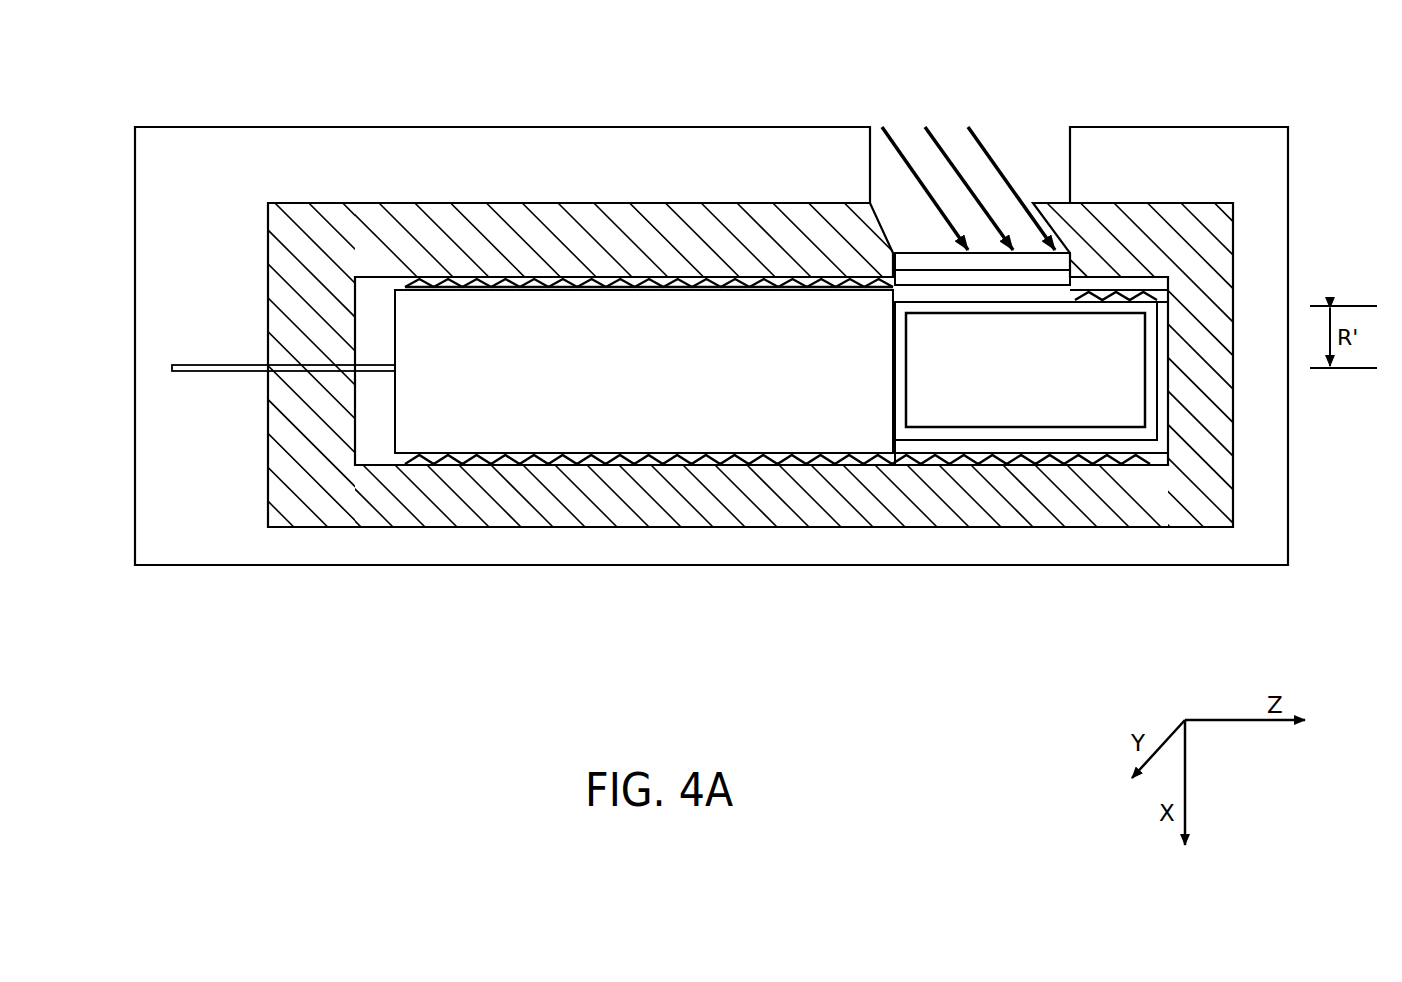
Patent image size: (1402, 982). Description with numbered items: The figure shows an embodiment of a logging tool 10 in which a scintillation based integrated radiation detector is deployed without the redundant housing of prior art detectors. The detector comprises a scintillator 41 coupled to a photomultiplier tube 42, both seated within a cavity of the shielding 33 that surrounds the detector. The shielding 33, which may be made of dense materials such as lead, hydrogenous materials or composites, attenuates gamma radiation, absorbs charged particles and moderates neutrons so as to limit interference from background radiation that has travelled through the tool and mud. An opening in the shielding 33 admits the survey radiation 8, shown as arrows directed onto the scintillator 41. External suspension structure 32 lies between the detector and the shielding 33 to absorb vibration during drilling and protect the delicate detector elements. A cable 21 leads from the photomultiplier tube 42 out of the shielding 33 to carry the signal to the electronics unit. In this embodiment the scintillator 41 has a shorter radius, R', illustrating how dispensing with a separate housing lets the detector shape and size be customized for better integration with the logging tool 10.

The logging tool 10 is at (498, 558).
The shielding 33 is at (643, 230).
The photomultiplier tube 42 is at (628, 393).
The scintillator 41 is at (1013, 397).
The external suspension structure 32 is at (957, 447).
The survey radiation 8 is at (988, 148).
The cable 21 is at (235, 371).